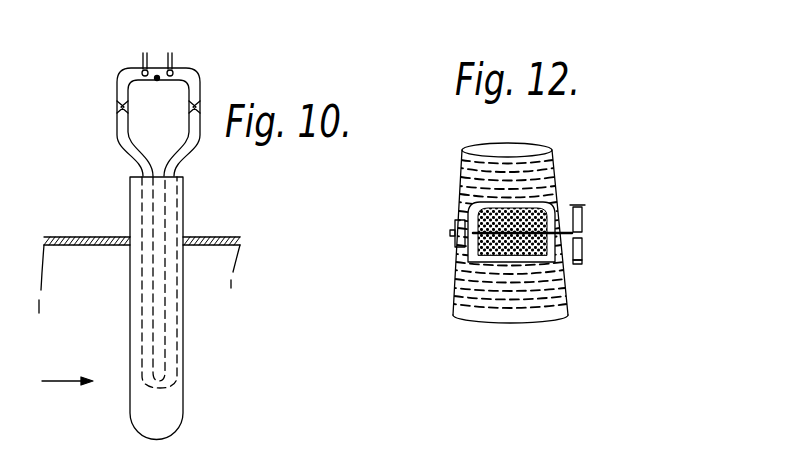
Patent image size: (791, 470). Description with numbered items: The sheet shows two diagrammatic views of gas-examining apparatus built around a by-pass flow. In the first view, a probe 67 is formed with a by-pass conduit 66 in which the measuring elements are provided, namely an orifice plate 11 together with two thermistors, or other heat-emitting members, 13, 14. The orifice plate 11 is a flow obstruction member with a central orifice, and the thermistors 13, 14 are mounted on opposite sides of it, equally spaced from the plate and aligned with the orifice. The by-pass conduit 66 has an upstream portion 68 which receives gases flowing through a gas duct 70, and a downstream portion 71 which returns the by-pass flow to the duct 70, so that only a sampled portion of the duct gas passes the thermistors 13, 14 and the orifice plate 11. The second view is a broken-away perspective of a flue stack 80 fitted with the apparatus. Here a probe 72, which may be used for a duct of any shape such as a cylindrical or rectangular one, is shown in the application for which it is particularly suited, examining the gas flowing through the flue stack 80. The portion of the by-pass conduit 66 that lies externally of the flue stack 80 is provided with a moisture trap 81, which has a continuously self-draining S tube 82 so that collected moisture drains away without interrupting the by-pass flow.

In FIG. 10, the orifice plate 11 is at (157, 82).
In FIG. 10, the thermistor 13 is at (140, 73).
In FIG. 12, the thermistor 13 is at (630, 196).
In FIG. 10, the thermistor 14 is at (176, 70).
In FIG. 12, the thermistor 14 is at (584, 213).
In FIG. 10, the by-pass conduit 66 is at (197, 140).
In FIG. 12, the by-pass conduit 66 is at (584, 230).
In FIG. 10, the probe 67 is at (170, 415).
In FIG. 10, the upstream portion 68 is at (133, 380).
In FIG. 10, the gas duct 70 is at (97, 262).
In FIG. 10, the downstream portion 71 is at (193, 377).
In FIG. 12, the probe 72 is at (470, 255).
In FIG. 12, the flue stack 80 is at (460, 187).
In FIG. 12, the moisture trap 81 is at (584, 247).
In FIG. 12, the S tube 82 is at (586, 258).